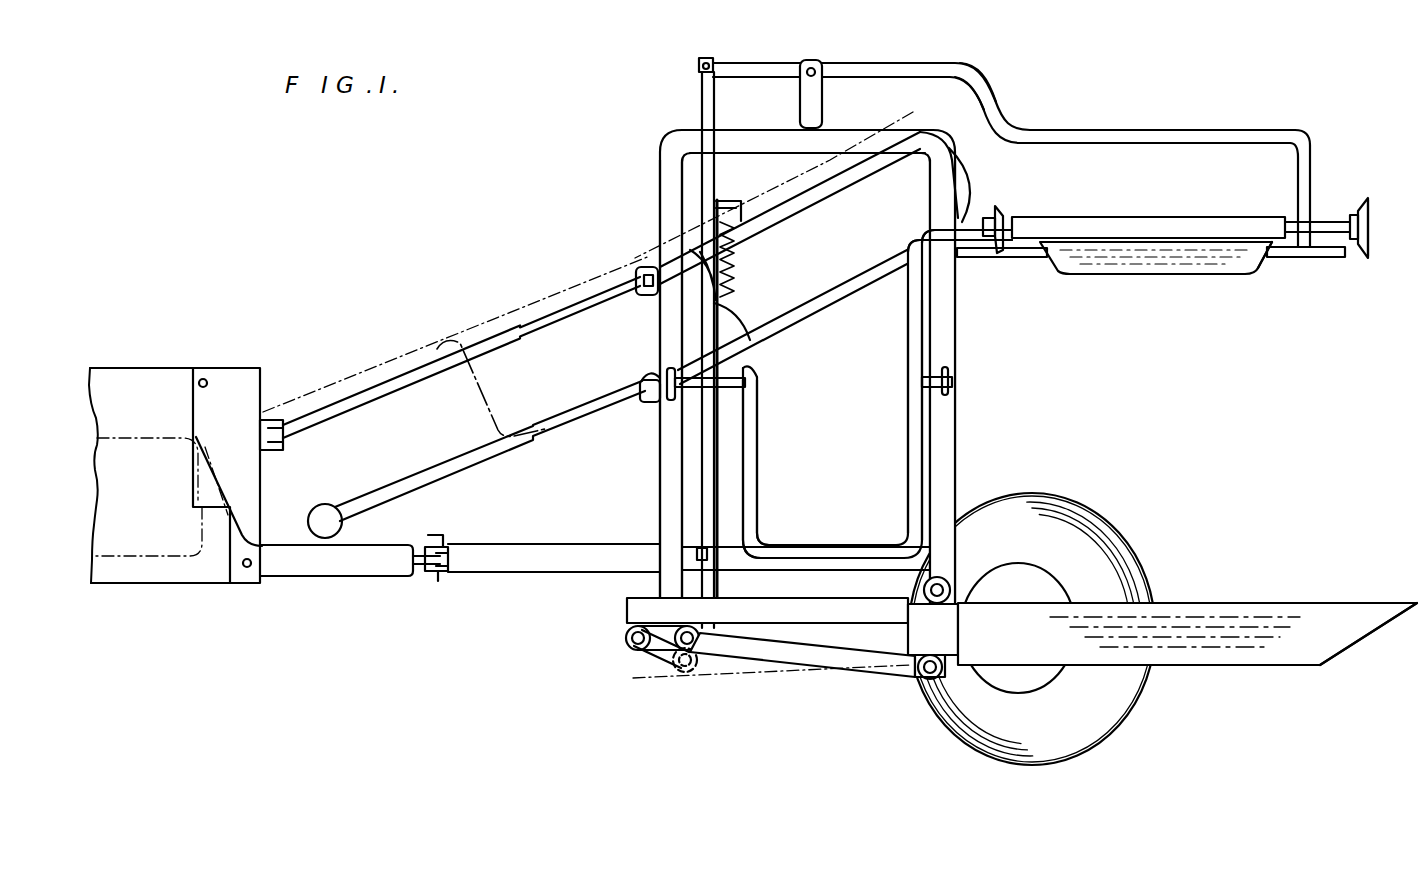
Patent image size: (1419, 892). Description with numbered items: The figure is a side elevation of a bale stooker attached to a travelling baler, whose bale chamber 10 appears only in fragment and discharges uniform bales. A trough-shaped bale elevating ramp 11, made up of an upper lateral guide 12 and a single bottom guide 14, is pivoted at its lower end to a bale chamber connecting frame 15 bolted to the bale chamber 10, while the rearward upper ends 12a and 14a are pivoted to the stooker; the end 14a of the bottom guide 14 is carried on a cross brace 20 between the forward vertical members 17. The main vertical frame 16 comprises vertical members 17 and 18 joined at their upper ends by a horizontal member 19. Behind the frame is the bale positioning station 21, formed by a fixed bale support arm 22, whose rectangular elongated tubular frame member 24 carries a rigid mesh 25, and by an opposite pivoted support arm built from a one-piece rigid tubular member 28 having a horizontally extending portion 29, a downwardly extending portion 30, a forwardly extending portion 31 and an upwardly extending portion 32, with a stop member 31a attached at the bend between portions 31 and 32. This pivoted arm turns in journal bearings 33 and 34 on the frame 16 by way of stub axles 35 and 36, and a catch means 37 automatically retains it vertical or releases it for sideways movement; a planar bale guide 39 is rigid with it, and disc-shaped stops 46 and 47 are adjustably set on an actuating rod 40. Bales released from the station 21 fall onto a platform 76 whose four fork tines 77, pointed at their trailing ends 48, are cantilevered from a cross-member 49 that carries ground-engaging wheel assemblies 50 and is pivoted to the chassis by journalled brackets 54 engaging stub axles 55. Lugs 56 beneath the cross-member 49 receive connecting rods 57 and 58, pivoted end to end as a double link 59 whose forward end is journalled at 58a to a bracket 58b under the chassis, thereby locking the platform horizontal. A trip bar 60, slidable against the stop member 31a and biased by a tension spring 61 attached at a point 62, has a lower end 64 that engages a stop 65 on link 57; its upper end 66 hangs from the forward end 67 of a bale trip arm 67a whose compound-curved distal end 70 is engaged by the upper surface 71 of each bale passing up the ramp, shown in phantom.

The bale chamber 10 is at (150, 368).
The bale elevating ramp 11 is at (565, 347).
The upper lateral guide 12 is at (384, 382).
The rearward upper end of upper lateral guide 12a is at (640, 270).
The bottom guide 14 is at (395, 495).
The rearward upper end of bottom guide 14a is at (641, 400).
The bale chamber connecting frame 15 is at (214, 381).
The main vertical frame 16 is at (665, 134).
The vertical member 17 is at (657, 212).
The vertical member 18 is at (955, 323).
The horizontal member 19 is at (837, 132).
The cross brace 20 is at (656, 378).
The bale positioning station 21 is at (1206, 214).
The bale support arm 22 is at (1100, 130).
The rectangular elongated tubular frame member 24 is at (1192, 130).
The rigid mesh 25 is at (1288, 130).
The rigid tubular member 28 is at (918, 472).
The horizontally and forwardly extending portion 29 is at (972, 236).
The vertically downwardly extending straight portion 30 is at (908, 456).
The horizontally and forwardly extending straight portion 31 is at (838, 545).
The stop member 31a is at (745, 552).
The vertically upwardly extending straight portion 32 is at (760, 490).
The journal bearing 33 is at (668, 398).
The journal bearing 34 is at (950, 384).
The horizontal stub axle 35 is at (742, 378).
The horizontal stub axle 36 is at (931, 382).
The catch means 37 is at (1125, 258).
The bale guide 39 is at (1220, 265).
The actuating rod 40 is at (1354, 216).
The disc-shaped stop 46 is at (1003, 222).
The disc-shaped stop 47 is at (1372, 250).
The trailing end of fork tine 48 is at (1342, 650).
The cross-member 49 is at (925, 623).
The ground-engaging wheel assembly 50 is at (1118, 545).
The journalled bracket 54 is at (1046, 558).
The stub axle 55 is at (946, 580).
The lug 56 is at (920, 676).
The connecting rod 57 is at (815, 652).
The connecting rod 58 is at (655, 662).
The forward pivot of double link 58a is at (625, 642).
The bracket 58b is at (640, 607).
The double link 59 is at (761, 662).
The trip bar 60 is at (745, 449).
The tension spring 61 is at (737, 255).
The spring attachment point 62 is at (730, 301).
The lower end of trip bar 64 is at (736, 618).
The stop 65 is at (712, 648).
The upper end of trip bar 66 is at (718, 86).
The forward end of bale trip arm 67 is at (710, 58).
The bale trip arm 67a is at (893, 62).
The distal end of bale trip arm 70 is at (990, 97).
The upper surface of bale 71 is at (906, 128).
The platform 76 is at (1240, 603).
The fork tines 77 is at (1285, 612).